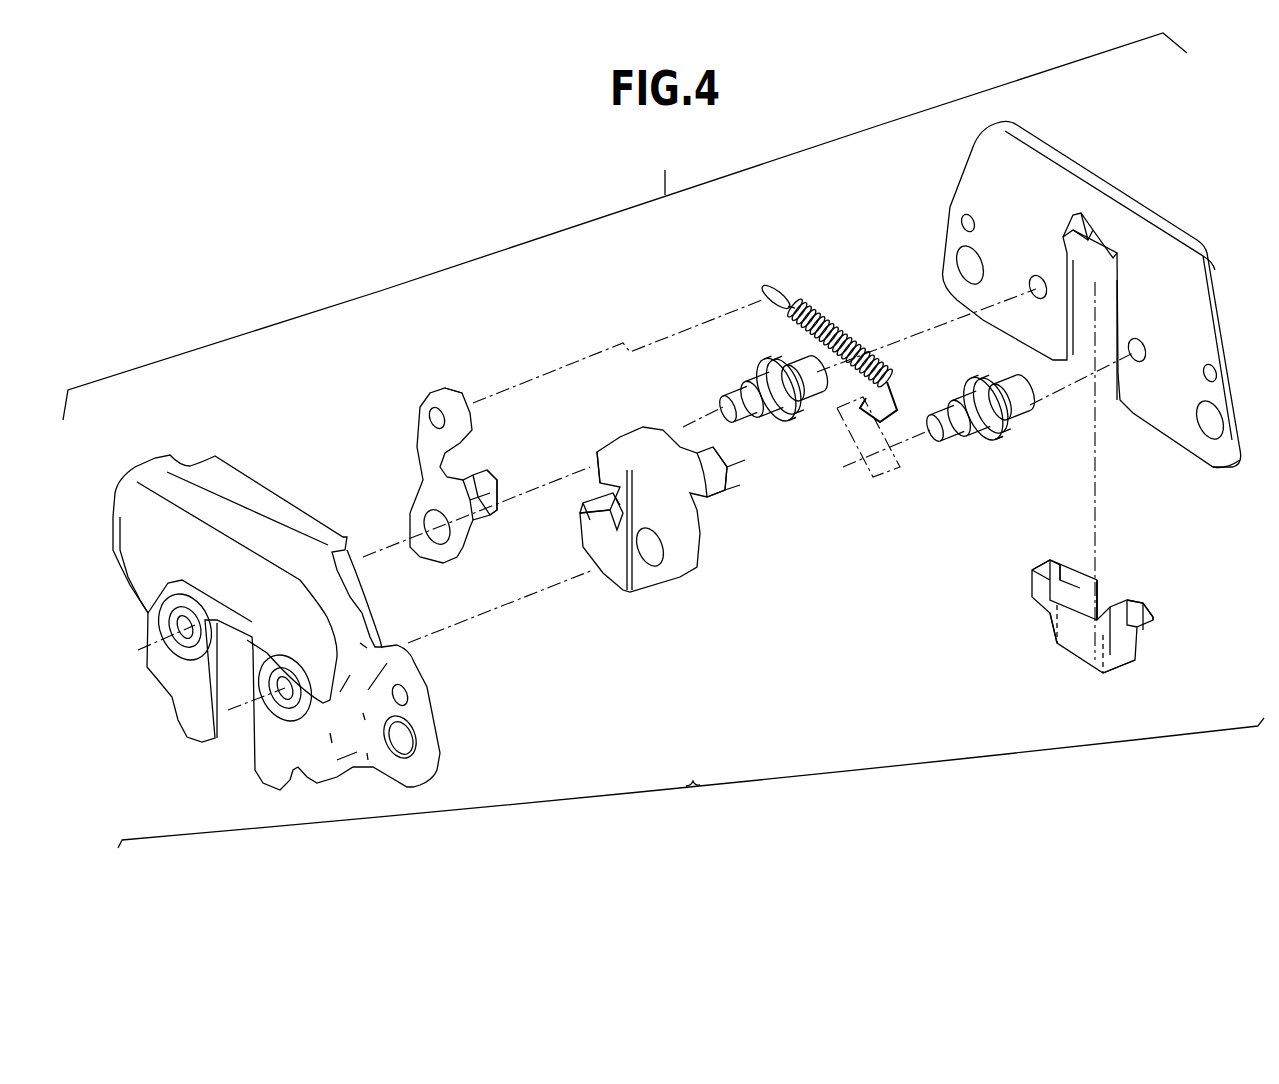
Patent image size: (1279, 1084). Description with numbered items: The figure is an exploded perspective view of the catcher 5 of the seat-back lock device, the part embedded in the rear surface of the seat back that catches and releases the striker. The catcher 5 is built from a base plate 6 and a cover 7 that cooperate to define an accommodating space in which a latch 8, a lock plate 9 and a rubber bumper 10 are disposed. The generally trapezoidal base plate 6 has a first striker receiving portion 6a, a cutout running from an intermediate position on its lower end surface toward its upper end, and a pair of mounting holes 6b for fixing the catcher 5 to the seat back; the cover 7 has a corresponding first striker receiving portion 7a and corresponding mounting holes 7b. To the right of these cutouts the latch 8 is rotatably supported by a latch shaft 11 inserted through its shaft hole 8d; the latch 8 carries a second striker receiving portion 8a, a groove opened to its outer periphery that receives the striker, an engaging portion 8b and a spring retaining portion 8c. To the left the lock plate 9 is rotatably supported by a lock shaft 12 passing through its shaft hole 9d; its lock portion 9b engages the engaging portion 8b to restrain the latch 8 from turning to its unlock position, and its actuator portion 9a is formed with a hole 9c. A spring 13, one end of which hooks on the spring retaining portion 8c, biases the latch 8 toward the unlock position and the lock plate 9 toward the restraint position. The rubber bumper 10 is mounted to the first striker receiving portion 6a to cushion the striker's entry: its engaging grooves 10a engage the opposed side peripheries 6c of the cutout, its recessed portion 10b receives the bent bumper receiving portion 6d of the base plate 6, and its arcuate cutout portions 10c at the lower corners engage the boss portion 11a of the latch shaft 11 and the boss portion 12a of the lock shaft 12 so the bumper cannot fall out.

The catcher 5 is at (663, 440).
The base plate 6 is at (1075, 275).
The first striker receiving portion 6a is at (1117, 312).
The mounting holes 6b is at (965, 268).
The opposed side peripheries 6c is at (1067, 318).
The bumper receiving portion 6d is at (1097, 255).
The cover 7 is at (304, 593).
The first striker receiving portion 7a is at (238, 740).
The mounting holes 7b is at (403, 738).
The latch 8 is at (649, 532).
The second striker receiving portion 8a is at (585, 520).
The engaging portion 8b is at (598, 453).
The spring retaining portion 8c is at (713, 490).
The shaft hole 8d is at (655, 552).
The lock plate 9 is at (443, 443).
The actuator portion 9a is at (447, 393).
The lock portion 9b is at (490, 505).
The hole 9c is at (432, 420).
The shaft hole 9d is at (433, 530).
The rubber bumper 10 is at (1094, 622).
The engaging grooves 10a is at (1048, 578).
The recessed portion 10b is at (1105, 600).
The cutout portions 10c is at (1040, 615).
The latch shaft 11 is at (970, 445).
The boss portion 11a is at (1000, 440).
The lock shaft 12 is at (747, 409).
The boss portion 12a is at (797, 408).
The spring 13 is at (805, 290).